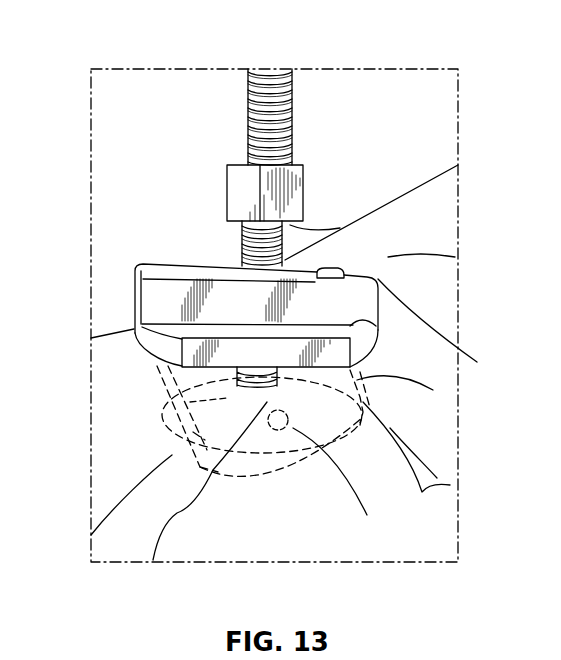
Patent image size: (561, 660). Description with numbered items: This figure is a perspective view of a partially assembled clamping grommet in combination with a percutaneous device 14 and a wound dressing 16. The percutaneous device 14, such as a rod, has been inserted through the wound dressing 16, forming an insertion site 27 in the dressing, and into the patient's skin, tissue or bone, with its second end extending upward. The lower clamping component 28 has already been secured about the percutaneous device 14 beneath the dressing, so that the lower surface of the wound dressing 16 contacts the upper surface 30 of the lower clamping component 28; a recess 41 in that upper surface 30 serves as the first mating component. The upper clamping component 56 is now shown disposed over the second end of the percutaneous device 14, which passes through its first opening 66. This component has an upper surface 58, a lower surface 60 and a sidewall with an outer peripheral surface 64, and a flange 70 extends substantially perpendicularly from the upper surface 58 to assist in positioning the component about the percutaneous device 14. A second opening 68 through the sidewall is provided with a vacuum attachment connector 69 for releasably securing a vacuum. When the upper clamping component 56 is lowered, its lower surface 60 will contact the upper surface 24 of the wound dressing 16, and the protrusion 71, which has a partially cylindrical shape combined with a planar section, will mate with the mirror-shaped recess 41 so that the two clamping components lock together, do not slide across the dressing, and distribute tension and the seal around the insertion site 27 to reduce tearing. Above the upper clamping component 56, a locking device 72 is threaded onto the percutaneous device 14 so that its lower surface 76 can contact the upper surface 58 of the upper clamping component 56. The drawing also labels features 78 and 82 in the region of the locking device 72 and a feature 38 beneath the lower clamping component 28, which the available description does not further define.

The percutaneous device 14 is at (270, 66).
The threads 78 is at (285, 147).
The locking device 72 is at (233, 175).
The nut body 82 is at (237, 207).
The first opening 66 is at (242, 266).
The wound dressing 16 is at (432, 157).
The lower surface 76 is at (295, 252).
The second opening 68 is at (340, 267).
The flange 70 is at (150, 279).
The upper clamping component 56 is at (128, 305).
The vacuum attachment connector 69 is at (390, 335).
The upper surface 58 is at (443, 328).
The outer peripheral surface 64 is at (360, 347).
The lower surface 60 is at (150, 358).
The protrusion 71 is at (183, 362).
The insertion site 27 is at (357, 390).
The upper surface 30 is at (363, 418).
The hidden flange 38 is at (187, 393).
The recess 41 is at (173, 435).
The lower clamping component 28 is at (262, 472).
The upper surface 24 is at (375, 535).